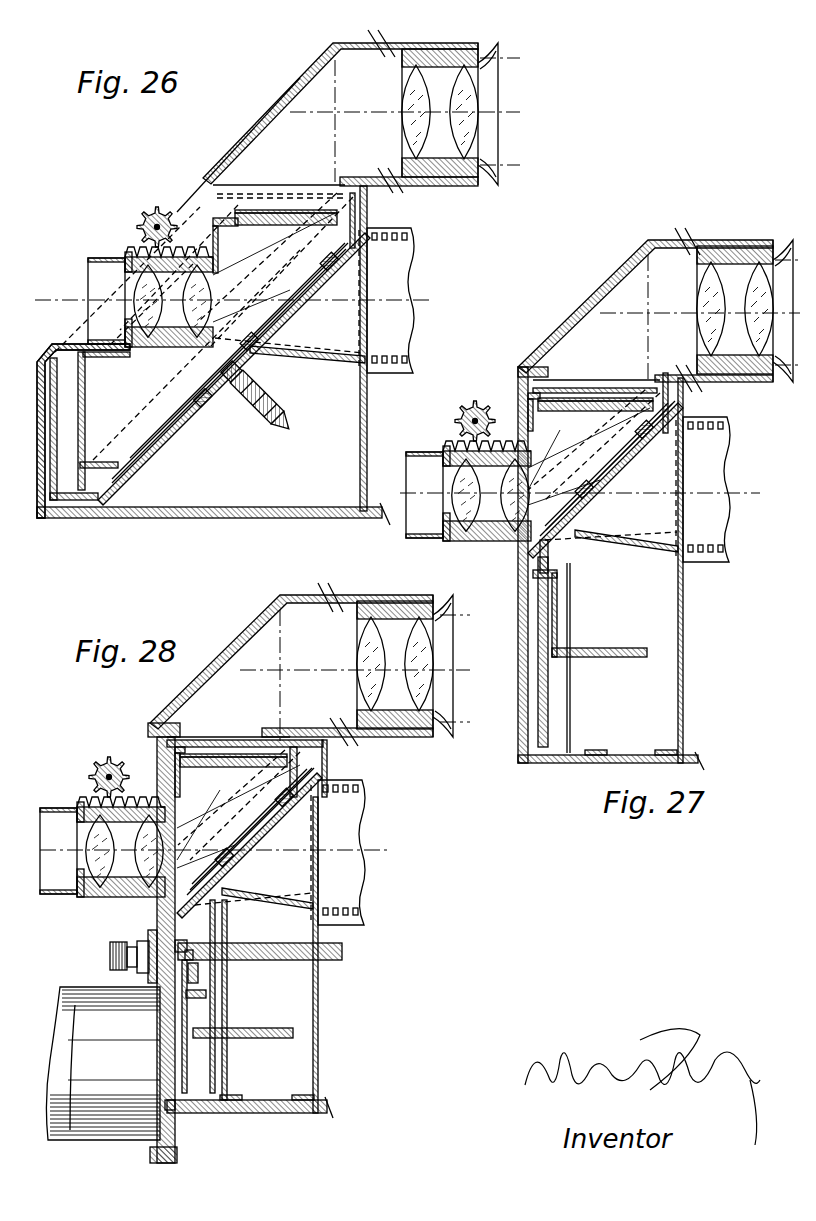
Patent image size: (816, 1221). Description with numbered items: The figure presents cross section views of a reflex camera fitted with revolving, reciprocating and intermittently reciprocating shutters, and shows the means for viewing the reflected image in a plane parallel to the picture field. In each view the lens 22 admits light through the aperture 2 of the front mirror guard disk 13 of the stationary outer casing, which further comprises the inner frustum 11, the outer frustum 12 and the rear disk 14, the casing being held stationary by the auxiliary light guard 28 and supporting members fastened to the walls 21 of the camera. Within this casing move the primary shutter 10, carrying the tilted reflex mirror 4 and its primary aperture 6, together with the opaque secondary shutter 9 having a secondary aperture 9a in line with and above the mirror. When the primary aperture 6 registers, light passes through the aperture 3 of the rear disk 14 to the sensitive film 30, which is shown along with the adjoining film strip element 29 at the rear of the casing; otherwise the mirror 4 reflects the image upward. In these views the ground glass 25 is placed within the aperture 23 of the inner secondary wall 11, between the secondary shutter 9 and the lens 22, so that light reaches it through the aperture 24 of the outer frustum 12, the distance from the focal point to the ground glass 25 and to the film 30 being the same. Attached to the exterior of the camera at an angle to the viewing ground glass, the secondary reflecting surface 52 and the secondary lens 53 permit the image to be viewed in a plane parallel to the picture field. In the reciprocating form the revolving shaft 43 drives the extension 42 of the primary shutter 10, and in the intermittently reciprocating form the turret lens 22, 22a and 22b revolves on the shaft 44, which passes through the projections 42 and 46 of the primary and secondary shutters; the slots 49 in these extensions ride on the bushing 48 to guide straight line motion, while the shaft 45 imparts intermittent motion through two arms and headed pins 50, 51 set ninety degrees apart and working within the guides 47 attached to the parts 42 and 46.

In FIG. 26, the aperture 2 is at (263, 322).
In FIG. 27, the aperture 2 is at (576, 520).
In FIG. 28, the aperture 2 is at (210, 868).
In FIG. 26, the aperture 3 is at (292, 305).
In FIG. 27, the aperture 3 is at (598, 500).
In FIG. 28, the aperture 3 is at (245, 858).
In FIG. 26, the reflex mirror 4 is at (318, 271).
In FIG. 27, the reflex mirror 4 is at (636, 463).
In FIG. 28, the reflex mirror 4 is at (275, 830).
In FIG. 26, the primary aperture 6 is at (177, 431).
In FIG. 26, the secondary shutter 9 is at (46, 440).
In FIG. 27, the secondary shutter 9 is at (664, 390).
In FIG. 28, the secondary shutter 9 is at (302, 742).
In FIG. 26, the secondary aperture 9a is at (293, 190).
In FIG. 27, the secondary aperture 9a is at (572, 388).
In FIG. 28, the secondary aperture 9a is at (244, 742).
In FIG. 26, the primary shutter 10 is at (311, 293).
In FIG. 27, the primary shutter 10 is at (616, 493).
In FIG. 28, the primary shutter 10 is at (263, 848).
In FIG. 26, the inner frustum 11 is at (219, 228).
In FIG. 27, the inner frustum 11 is at (531, 410).
In FIG. 28, the inner frustum 11 is at (181, 772).
In FIG. 26, the outer frustum 12 is at (349, 198).
In FIG. 27, the outer frustum 12 is at (656, 385).
In FIG. 28, the outer frustum 12 is at (279, 730).
In FIG. 26, the front mirror guard disk 13 is at (250, 370).
In FIG. 27, the front mirror guard disk 13 is at (547, 540).
In FIG. 28, the front mirror guard disk 13 is at (190, 893).
In FIG. 26, the rear disk 14 is at (148, 454).
In FIG. 27, the rear disk 14 is at (570, 545).
In FIG. 28, the rear disk 14 is at (222, 905).
In FIG. 26, the walls of the camera 21 is at (320, 507).
In FIG. 27, the walls of the camera 21 is at (519, 392).
In FIG. 28, the walls of the camera 21 is at (157, 762).
In FIG. 26, the lens 22 is at (88, 270).
In FIG. 27, the lens 22 is at (468, 471).
In FIG. 28, the lens 22 is at (102, 827).
In FIG. 28, the turret lens 22a is at (65, 1020).
In FIG. 28, the turret lens 22b is at (114, 1060).
In FIG. 26, the aperture 23 is at (273, 226).
In FIG. 27, the aperture 23 is at (583, 411).
In FIG. 28, the aperture 23 is at (220, 767).
In FIG. 26, the aperture 24 is at (262, 183).
In FIG. 27, the aperture 24 is at (613, 380).
In FIG. 28, the aperture 24 is at (210, 737).
In FIG. 26, the ground glass 25 is at (297, 210).
In FIG. 27, the ground glass 25 is at (625, 410).
In FIG. 28, the ground glass 25 is at (258, 766).
In FIG. 26, the auxiliary light guard 28 is at (331, 358).
In FIG. 27, the auxiliary light guard 28 is at (645, 547).
In FIG. 28, the auxiliary light guard 28 is at (292, 905).
In FIG. 26, the film strip 29 is at (366, 270).
In FIG. 27, the film strip 29 is at (681, 463).
In FIG. 28, the film strip 29 is at (318, 810).
In FIG. 26, the sensitive film 30 is at (379, 300).
In FIG. 27, the sensitive film 30 is at (693, 490).
In FIG. 28, the sensitive film 30 is at (330, 852).
In FIG. 27, the extension 42 is at (549, 683).
In FIG. 28, the extension 42 is at (178, 1115).
In FIG. 27, the revolving shaft 43 is at (606, 648).
In FIG. 28, the shaft 44 is at (342, 952).
In FIG. 28, the shaft 45 is at (270, 1030).
In FIG. 28, the projection 46 is at (217, 1075).
In FIG. 28, the guides 47 is at (200, 968).
In FIG. 28, the bushing 48 is at (158, 942).
In FIG. 28, the slots 49 is at (186, 950).
In FIG. 28, the headed pin 50 is at (206, 996).
In FIG. 28, the headed pin 51 is at (218, 1045).
In FIG. 26, the secondary reflecting surface 52 is at (313, 82).
In FIG. 27, the secondary reflecting surface 52 is at (630, 278).
In FIG. 28, the secondary reflecting surface 52 is at (266, 624).
In FIG. 26, the secondary lens 53 is at (460, 108).
In FIG. 27, the secondary lens 53 is at (745, 248).
In FIG. 28, the secondary lens 53 is at (366, 657).